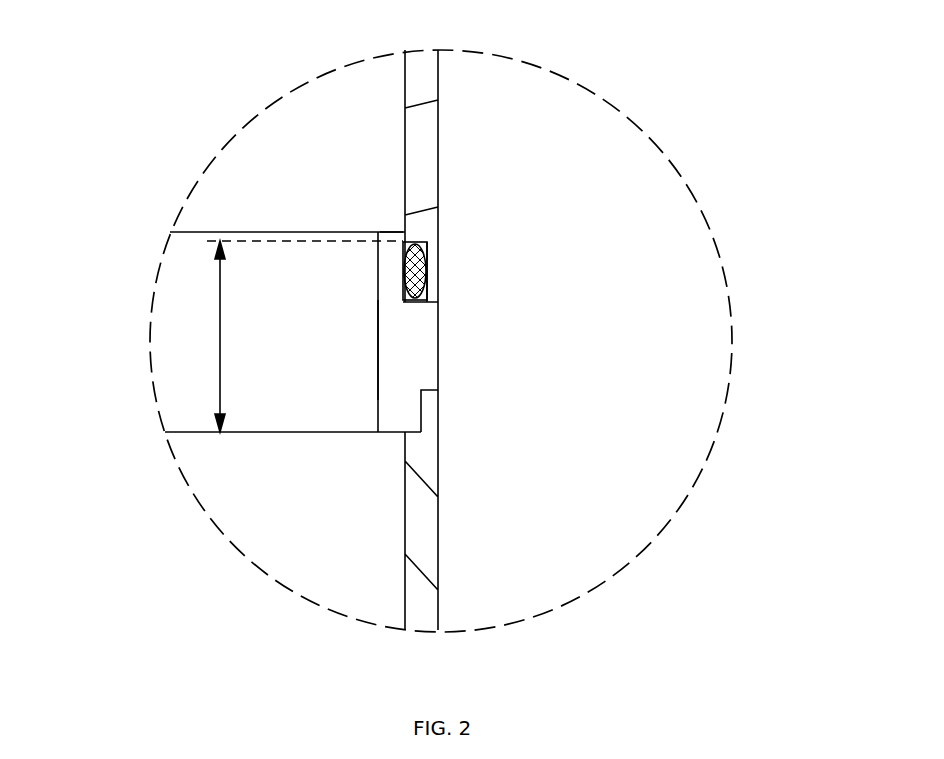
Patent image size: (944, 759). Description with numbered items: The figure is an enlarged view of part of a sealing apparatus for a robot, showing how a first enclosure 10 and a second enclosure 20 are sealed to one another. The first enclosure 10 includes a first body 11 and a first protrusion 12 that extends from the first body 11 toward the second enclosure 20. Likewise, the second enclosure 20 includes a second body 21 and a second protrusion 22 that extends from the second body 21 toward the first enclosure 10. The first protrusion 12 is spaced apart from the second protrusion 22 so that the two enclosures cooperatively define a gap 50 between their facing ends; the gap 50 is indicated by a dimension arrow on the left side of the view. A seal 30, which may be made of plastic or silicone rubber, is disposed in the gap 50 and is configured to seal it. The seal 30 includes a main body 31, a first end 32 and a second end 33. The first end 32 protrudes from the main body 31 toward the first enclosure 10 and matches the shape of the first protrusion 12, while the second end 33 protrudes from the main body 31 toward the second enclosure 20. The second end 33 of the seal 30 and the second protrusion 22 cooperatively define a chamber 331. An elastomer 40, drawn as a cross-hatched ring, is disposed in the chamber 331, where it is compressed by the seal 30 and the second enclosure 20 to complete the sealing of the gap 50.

The first enclosure 10 is at (595, 475).
The first body 11 is at (418, 542).
The first protrusion 12 is at (428, 415).
The second enclosure 20 is at (618, 176).
The second body 21 is at (430, 156).
The second protrusion 22 is at (430, 275).
The seal 30 is at (254, 345).
The main body 31 is at (408, 348).
The first end 32 is at (408, 423).
The second end 33 is at (388, 257).
The chamber 331 is at (405, 233).
The elastomer 40 is at (430, 291).
The gap 50 is at (220, 333).